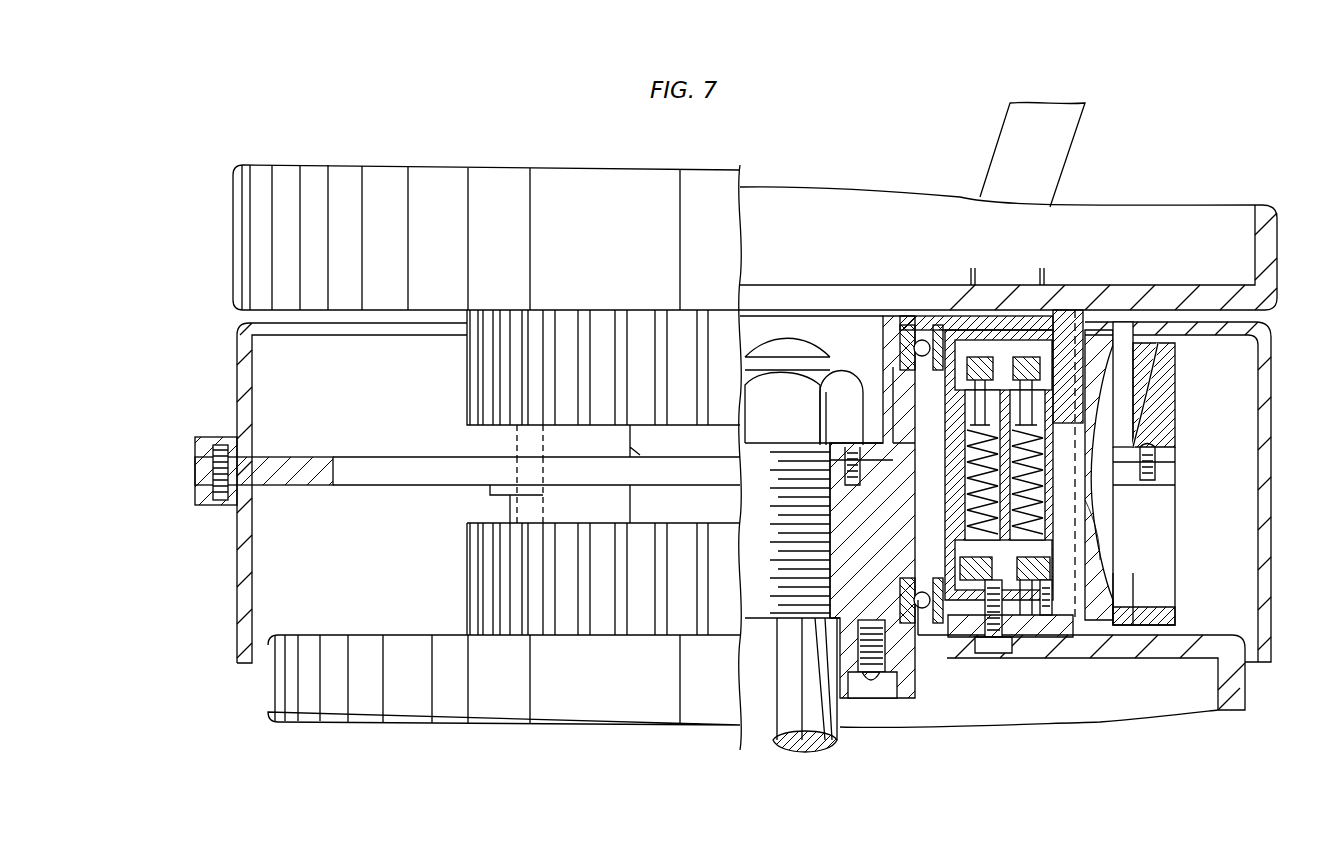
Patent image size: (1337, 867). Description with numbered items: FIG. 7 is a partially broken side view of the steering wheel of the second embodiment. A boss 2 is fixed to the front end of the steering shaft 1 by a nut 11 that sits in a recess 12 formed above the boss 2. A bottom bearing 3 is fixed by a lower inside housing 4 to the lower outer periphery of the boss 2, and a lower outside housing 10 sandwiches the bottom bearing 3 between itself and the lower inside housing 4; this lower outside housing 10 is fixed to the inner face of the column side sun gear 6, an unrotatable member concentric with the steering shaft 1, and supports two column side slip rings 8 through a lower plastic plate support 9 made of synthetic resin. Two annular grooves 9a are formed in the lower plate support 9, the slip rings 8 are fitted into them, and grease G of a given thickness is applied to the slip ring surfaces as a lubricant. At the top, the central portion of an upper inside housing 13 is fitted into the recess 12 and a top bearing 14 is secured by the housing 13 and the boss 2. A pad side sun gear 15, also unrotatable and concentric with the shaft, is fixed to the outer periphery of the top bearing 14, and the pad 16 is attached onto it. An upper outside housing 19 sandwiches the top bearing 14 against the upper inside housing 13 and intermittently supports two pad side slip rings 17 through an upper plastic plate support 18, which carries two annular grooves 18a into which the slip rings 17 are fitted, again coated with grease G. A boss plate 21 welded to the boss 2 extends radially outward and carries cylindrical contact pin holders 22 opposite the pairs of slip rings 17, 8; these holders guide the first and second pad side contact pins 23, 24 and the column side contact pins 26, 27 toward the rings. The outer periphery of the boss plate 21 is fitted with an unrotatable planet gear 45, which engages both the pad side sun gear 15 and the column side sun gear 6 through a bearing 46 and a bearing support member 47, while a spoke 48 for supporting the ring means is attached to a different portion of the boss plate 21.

The steering shaft 1 is at (840, 735).
The boss 2 is at (850, 567).
The bottom bearing 3 is at (945, 630).
The lower inside housing 4 is at (918, 688).
The column side sun gear 6 is at (683, 625).
The column side slip rings 8 is at (1030, 640).
The lower plastic plate support 9 is at (1085, 575).
The annular grooves 9a is at (970, 650).
The lower outside housing 10 is at (1085, 640).
The nut 11 is at (782, 337).
The recess 12 is at (900, 396).
The upper inside housing 13 is at (893, 330).
The top bearing 14 is at (938, 335).
The pad side sun gear 15 is at (683, 325).
The pad 16 is at (1270, 257).
The pad side slip rings 17 is at (1020, 352).
The upper plastic plate support 18 is at (965, 332).
The annular grooves 18a is at (963, 415).
The upper outside housing 19 is at (1040, 330).
The boss plate 21 is at (1165, 474).
The contact pin holder 22 is at (968, 430).
The first pad side contact pin 23 is at (898, 418).
The second pad side contact pin 24 is at (1138, 404).
The column side contact pin 26 is at (968, 533).
The second column side contact pin 27 is at (1085, 545).
The planet gear 45 is at (1176, 364).
The bearing 46 is at (1165, 452).
The bearing support member 47 is at (1150, 325).
The spoke 48 is at (1068, 142).
The grease G is at (898, 376).